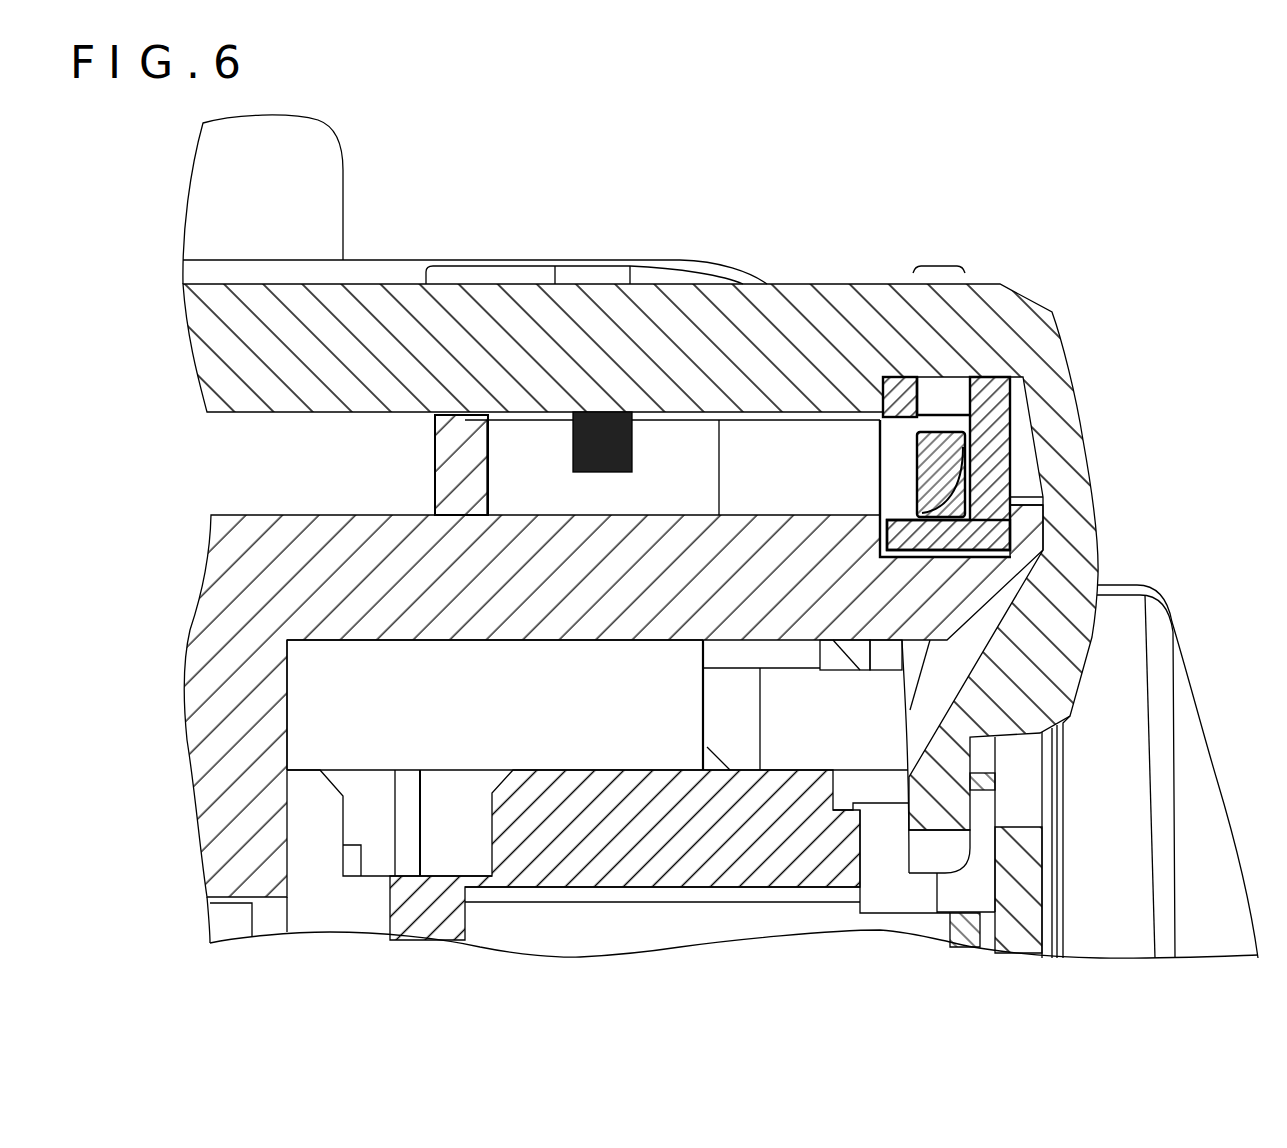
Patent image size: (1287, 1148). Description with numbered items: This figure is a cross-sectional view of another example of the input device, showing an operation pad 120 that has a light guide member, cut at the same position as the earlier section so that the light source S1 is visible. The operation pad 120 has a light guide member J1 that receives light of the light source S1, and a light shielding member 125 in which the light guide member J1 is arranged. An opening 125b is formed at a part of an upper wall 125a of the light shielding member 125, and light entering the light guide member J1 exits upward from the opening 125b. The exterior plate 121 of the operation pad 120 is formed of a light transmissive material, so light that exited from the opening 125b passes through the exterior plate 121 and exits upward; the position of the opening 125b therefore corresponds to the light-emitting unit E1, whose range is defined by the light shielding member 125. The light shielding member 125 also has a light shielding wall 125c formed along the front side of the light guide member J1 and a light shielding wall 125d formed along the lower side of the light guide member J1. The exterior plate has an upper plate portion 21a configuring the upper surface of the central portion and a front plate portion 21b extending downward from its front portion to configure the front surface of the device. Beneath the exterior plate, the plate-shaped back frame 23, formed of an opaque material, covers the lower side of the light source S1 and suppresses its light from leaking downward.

The operation pad 120 is at (592, 211).
The upper plate portion 21a is at (512, 312).
The front plate portion 21b is at (1088, 652).
The exterior plate 121 is at (708, 284).
The light shielding member 125 is at (1020, 398).
The upper wall 125a is at (897, 385).
The opening 125b is at (948, 388).
The light shielding wall 125c is at (987, 483).
The light shielding wall 125d is at (955, 542).
The light-emitting unit E1 is at (939, 251).
The light guide member J1 is at (952, 453).
The light source S1 is at (573, 456).
The back frame 23 is at (370, 618).